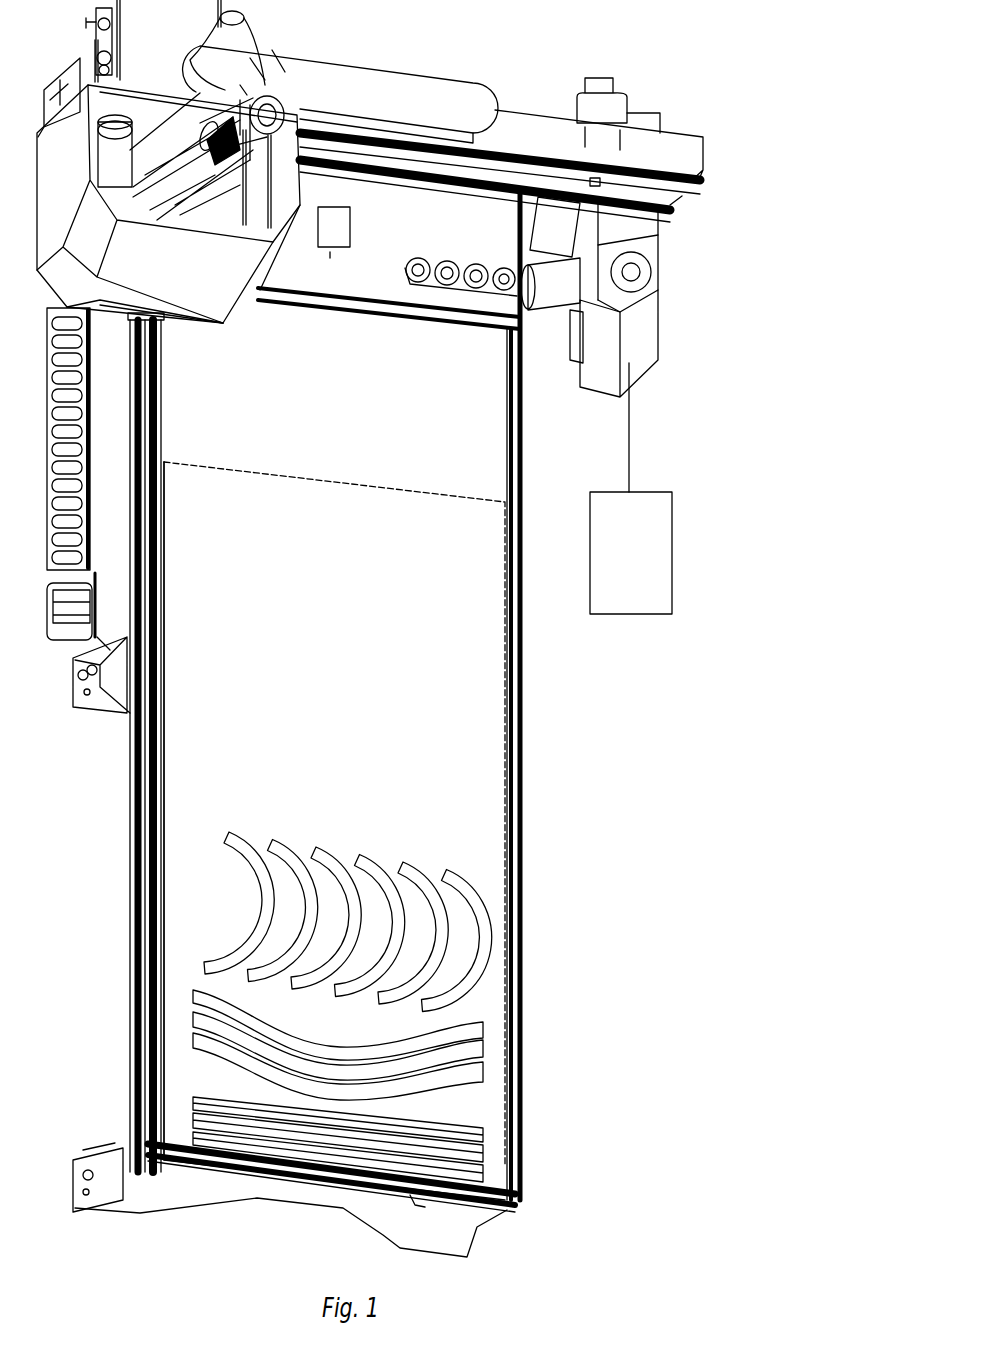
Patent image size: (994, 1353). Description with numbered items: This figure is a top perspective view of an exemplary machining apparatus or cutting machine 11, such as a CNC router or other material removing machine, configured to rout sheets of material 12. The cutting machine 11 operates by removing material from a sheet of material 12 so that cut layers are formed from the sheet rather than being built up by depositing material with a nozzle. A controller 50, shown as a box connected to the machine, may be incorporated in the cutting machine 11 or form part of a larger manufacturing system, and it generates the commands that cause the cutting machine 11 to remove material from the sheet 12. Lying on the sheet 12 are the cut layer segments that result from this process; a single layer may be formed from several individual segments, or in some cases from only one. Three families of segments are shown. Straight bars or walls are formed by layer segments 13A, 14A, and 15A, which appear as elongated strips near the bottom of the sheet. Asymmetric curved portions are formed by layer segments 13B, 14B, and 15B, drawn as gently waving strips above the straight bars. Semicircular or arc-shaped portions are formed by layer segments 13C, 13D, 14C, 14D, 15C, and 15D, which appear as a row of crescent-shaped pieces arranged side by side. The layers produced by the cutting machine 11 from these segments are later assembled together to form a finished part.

The cutting machine 11 is at (437, 628).
The sheet of material 12 is at (287, 463).
The controller 50 is at (640, 560).
The layer segment 13A is at (470, 1172).
The layer segment 14A is at (473, 1150).
The layer segment 15A is at (475, 1137).
The layer segment 13B is at (470, 1070).
The layer segment 14B is at (468, 1048).
The layer segment 15B is at (475, 1022).
The layer segment 13C is at (445, 870).
The layer segment 13D is at (401, 862).
The layer segment 14C is at (357, 855).
The layer segment 14D is at (314, 848).
The layer segment 15C is at (270, 840).
The layer segment 15D is at (227, 833).